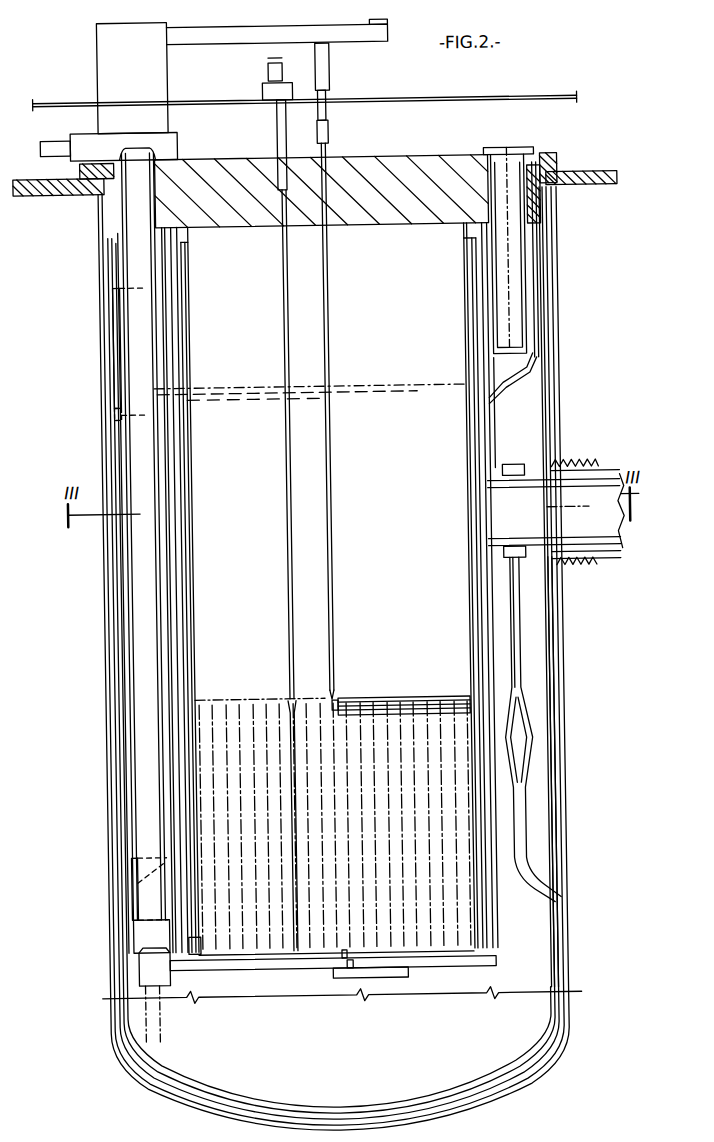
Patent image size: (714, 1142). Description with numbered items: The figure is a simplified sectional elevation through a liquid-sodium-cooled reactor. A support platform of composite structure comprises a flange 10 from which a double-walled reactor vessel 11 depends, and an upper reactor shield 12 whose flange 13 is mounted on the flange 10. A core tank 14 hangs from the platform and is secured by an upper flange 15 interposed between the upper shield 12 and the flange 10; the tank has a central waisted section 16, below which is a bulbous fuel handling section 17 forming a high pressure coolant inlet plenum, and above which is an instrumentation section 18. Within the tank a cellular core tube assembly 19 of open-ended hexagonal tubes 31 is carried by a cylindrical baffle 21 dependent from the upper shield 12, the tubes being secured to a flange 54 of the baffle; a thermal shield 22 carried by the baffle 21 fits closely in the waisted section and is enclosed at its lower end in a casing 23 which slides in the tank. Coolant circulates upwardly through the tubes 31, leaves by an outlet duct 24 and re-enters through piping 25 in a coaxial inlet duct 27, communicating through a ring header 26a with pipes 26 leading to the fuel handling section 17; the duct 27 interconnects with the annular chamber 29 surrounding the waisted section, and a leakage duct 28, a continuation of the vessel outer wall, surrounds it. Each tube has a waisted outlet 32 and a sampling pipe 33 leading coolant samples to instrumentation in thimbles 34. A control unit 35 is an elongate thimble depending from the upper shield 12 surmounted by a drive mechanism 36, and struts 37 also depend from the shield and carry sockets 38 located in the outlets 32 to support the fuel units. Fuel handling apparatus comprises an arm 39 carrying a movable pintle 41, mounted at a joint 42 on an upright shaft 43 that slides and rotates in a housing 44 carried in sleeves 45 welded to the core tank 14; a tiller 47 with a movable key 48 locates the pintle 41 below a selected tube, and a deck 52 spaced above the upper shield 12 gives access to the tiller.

The flange 10 is at (593, 176).
The double-walled reactor vessel 11 is at (104, 626).
The upper reactor shield 12 is at (404, 158).
The flange 13 is at (573, 163).
The core tank 14 is at (546, 216).
The upper flange 15 is at (566, 193).
The central waisted section 16 is at (447, 622).
The bulbous fuel handling section 17 is at (320, 1050).
The instrumentation section 18 is at (449, 294).
The cellular core tube assembly 19 is at (216, 760).
The cylindrical baffle 21 is at (123, 669).
The thermal shield 22 is at (178, 680).
The casing 23 is at (183, 938).
The outlet duct 24 is at (590, 474).
The piping 25 is at (579, 464).
The pipes 26 is at (522, 743).
The ring header 26a is at (525, 465).
The coaxial inlet duct 27 is at (597, 569).
The leakage duct 28 is at (577, 570).
The annular chamber 29 is at (528, 676).
The hexagonal tubes 31 is at (340, 917).
The waisted outlet 32 is at (336, 695).
The sampling pipe 33 is at (370, 696).
The thimbles 34 is at (523, 256).
The control units 35 is at (288, 364).
The drive mechanism 36 is at (273, 87).
The struts 37 is at (336, 365).
The sockets 38 is at (331, 695).
The arm 39 is at (264, 969).
The movable pintle 41 is at (336, 960).
The joint 42 is at (133, 969).
The upright shaft 43 is at (139, 932).
The housing 44 is at (115, 647).
The sleeves 45 is at (117, 402).
The boom or tiller 47 is at (213, 42).
The movable key 48 is at (341, 80).
The deck 52 is at (405, 99).
The flange 54 is at (344, 968).